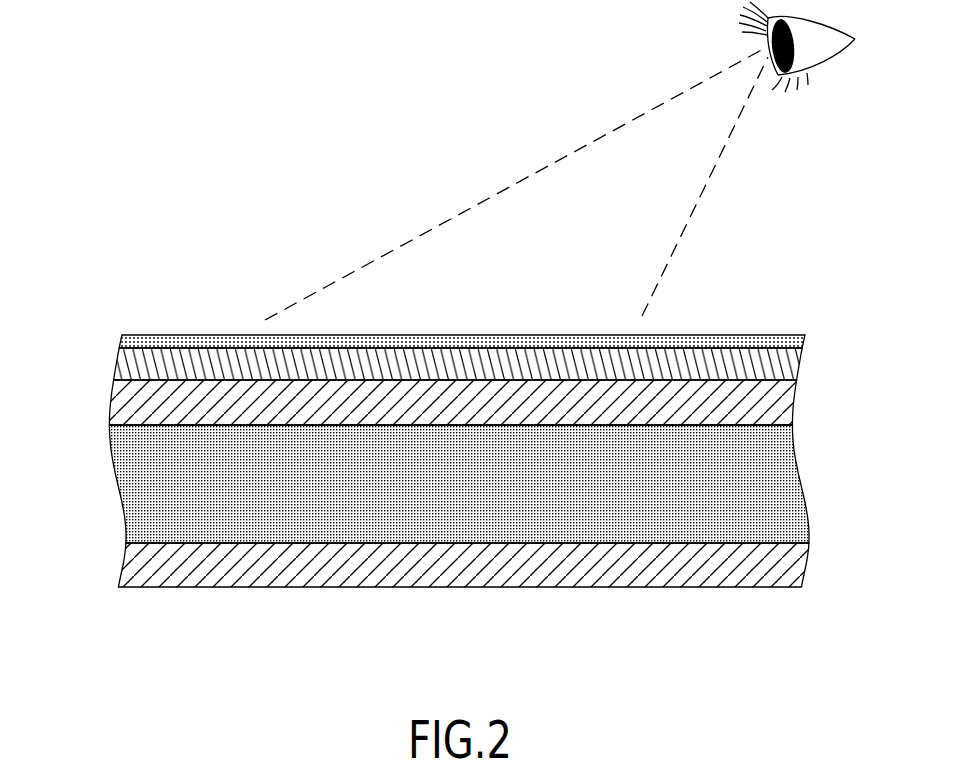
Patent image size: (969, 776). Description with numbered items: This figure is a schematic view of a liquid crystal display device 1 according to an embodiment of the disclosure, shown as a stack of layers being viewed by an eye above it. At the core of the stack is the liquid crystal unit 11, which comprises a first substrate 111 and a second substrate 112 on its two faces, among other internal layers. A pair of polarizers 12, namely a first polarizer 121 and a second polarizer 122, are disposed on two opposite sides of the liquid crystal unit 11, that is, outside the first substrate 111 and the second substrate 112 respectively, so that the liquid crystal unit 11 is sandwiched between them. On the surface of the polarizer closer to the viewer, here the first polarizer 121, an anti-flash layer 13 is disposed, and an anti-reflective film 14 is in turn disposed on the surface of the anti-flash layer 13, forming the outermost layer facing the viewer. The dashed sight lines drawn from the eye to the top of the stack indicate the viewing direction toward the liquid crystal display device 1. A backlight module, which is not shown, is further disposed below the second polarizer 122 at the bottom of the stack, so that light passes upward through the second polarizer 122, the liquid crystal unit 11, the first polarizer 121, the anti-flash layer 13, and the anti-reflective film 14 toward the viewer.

The liquid crystal display device 1 is at (226, 257).
The liquid crystal unit 11 is at (773, 480).
The first substrate 111 is at (765, 424).
The second substrate 112 is at (773, 540).
The pair of polarizers 12 is at (50, 403).
The first polarizer 121 is at (125, 399).
The second polarizer 122 is at (128, 577).
The anti-flash layer 13 is at (797, 367).
The anti-reflective film 14 is at (805, 342).